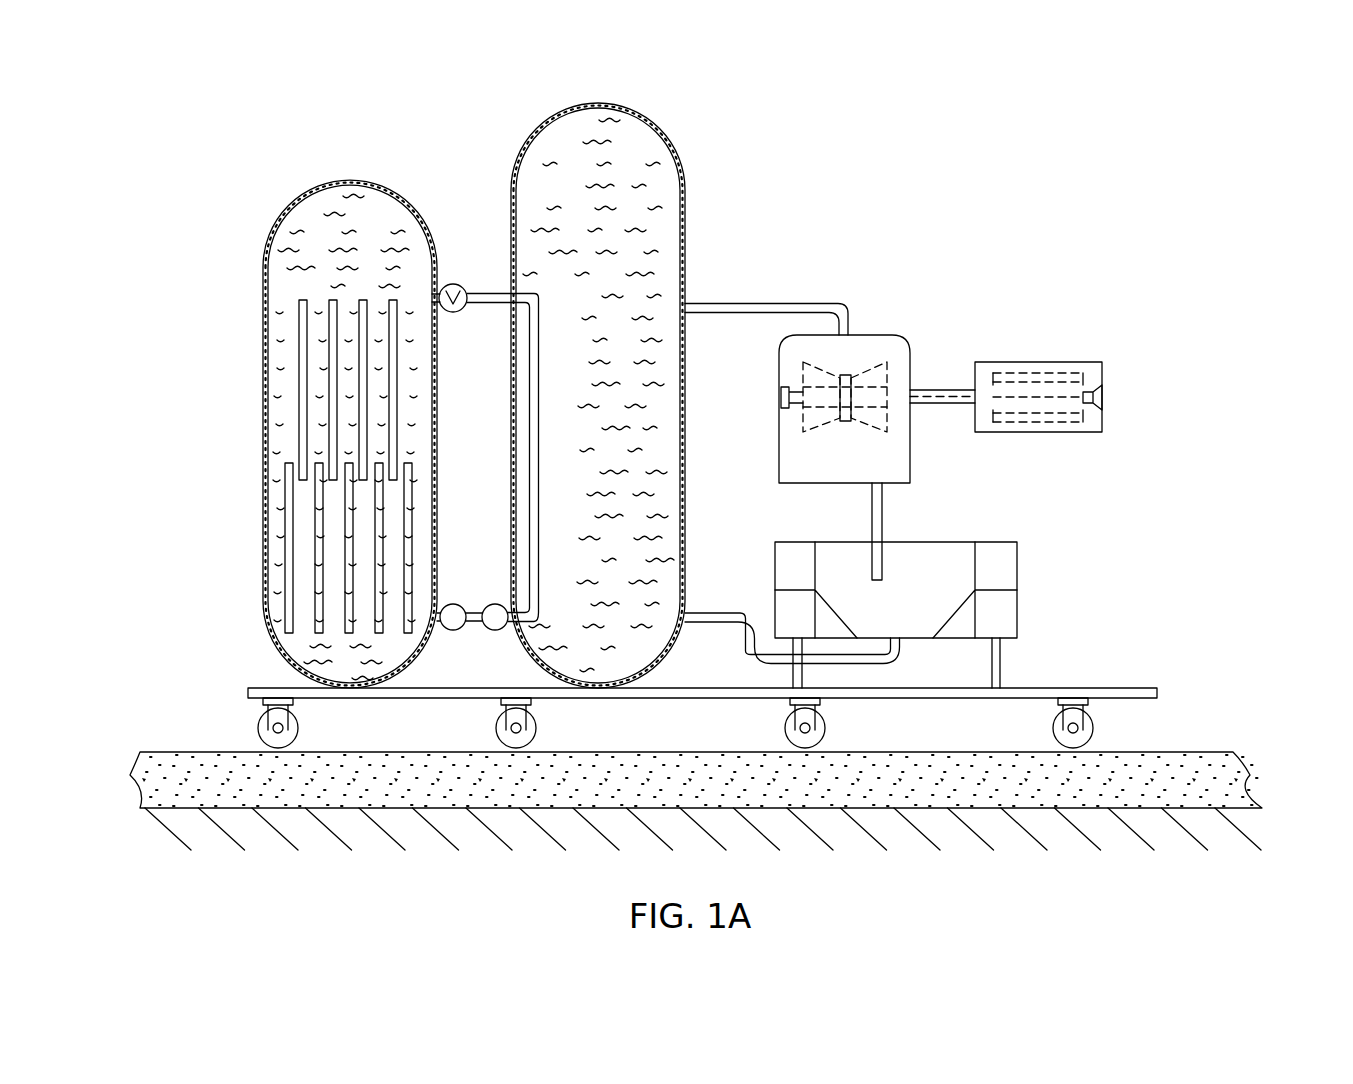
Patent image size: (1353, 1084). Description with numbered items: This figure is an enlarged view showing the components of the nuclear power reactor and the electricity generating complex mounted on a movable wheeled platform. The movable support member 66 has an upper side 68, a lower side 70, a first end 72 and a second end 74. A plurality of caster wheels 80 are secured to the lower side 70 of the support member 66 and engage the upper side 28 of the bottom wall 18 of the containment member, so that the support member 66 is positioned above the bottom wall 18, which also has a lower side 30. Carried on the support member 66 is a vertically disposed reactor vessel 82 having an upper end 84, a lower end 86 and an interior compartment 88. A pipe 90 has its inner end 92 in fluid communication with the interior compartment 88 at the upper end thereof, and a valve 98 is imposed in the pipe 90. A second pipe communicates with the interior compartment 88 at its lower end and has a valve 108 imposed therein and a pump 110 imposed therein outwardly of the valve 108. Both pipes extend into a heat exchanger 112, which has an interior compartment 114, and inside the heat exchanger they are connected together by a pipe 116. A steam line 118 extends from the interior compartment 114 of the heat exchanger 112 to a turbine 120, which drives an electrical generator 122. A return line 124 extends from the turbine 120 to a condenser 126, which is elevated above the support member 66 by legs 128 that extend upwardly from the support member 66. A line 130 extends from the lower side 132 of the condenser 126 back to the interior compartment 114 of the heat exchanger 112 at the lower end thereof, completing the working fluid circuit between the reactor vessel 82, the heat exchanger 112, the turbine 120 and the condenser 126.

The bottom wall 18 is at (566, 792).
The upper side 28 is at (1160, 752).
The lower side 30 is at (1073, 810).
The movable support member 66 is at (684, 755).
The upper side 68 is at (267, 687).
The lower side 70 is at (598, 700).
The first end 72 is at (248, 693).
The second end 74 is at (1157, 690).
The caster wheels 80 is at (258, 727).
The reactor vessel 82 is at (365, 375).
The upper end 84 is at (320, 182).
The lower end 86 is at (347, 688).
The interior compartment 88 is at (377, 243).
The pipe 90 is at (502, 300).
The inner end 92 is at (437, 293).
The valve 98 is at (458, 285).
The valve 108 is at (453, 630).
The pump 110 is at (495, 630).
The heat exchanger 112 is at (665, 395).
The interior compartment 114 is at (657, 462).
The pipe 116 is at (536, 407).
The steam line 118 is at (785, 304).
The turbine 120 is at (875, 345).
The electrical generator 122 is at (1025, 362).
The return line 124 is at (878, 515).
The condenser 126 is at (960, 555).
The legs 128 is at (792, 677).
The line 130 is at (866, 660).
The lower side 132 is at (950, 640).